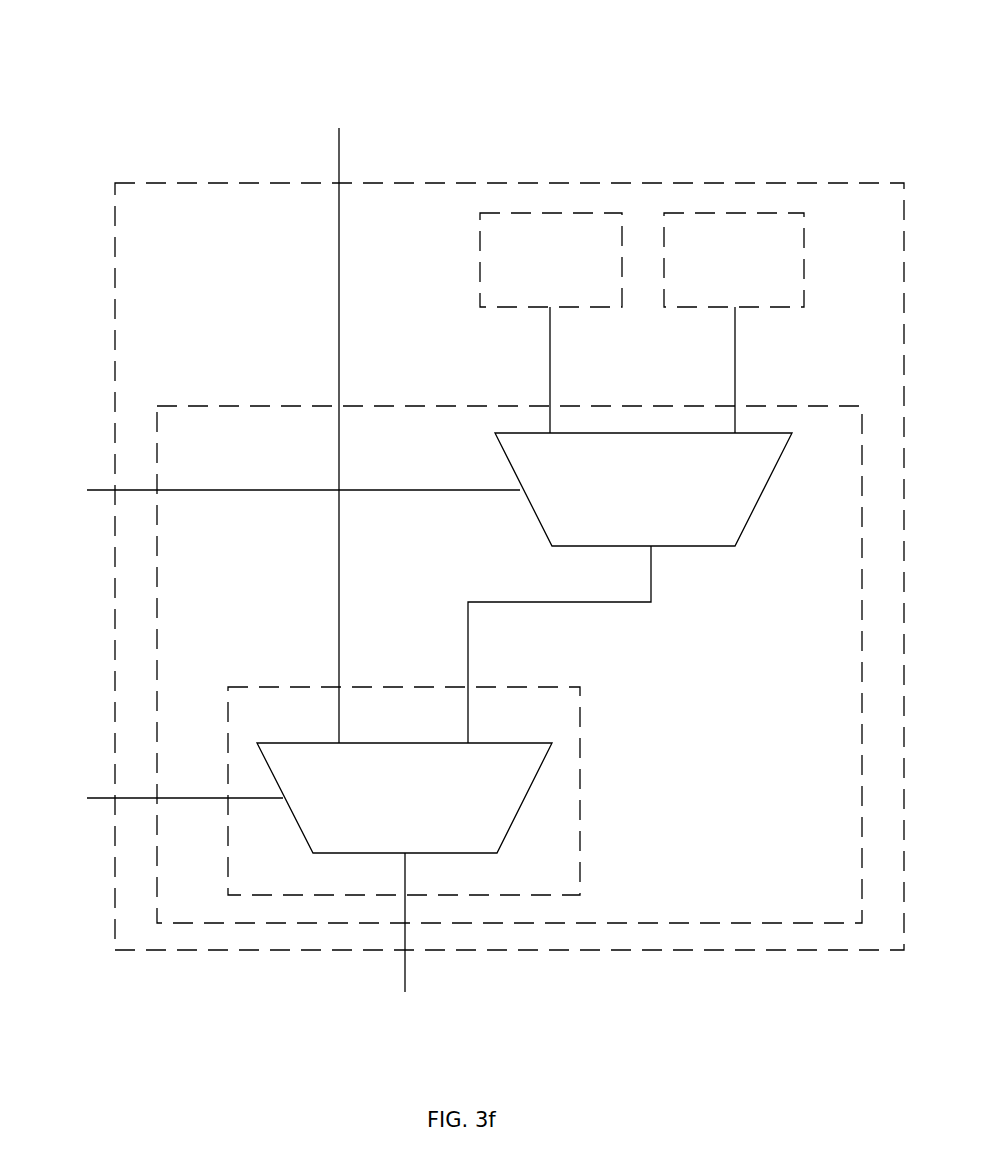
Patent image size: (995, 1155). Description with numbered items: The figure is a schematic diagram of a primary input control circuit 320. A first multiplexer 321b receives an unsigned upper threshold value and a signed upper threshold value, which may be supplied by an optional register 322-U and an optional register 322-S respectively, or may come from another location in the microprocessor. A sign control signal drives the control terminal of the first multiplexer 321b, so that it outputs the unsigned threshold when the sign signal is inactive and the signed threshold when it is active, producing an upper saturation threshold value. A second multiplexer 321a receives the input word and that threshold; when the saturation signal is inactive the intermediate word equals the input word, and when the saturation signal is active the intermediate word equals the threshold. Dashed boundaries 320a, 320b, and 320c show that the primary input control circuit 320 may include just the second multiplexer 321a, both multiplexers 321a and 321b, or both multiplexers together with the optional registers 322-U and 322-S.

The primary input control circuit 320 is at (106, 76).
The primary input control circuit boundary 320c is at (268, 182).
The primary input control circuit boundary 320b is at (257, 405).
The primary input control circuit boundary 320a is at (270, 687).
The optional register 322-U is at (551, 260).
The optional register 322-S is at (734, 260).
The first multiplexer 321b is at (643, 489).
The second multiplexer 321a is at (404, 798).